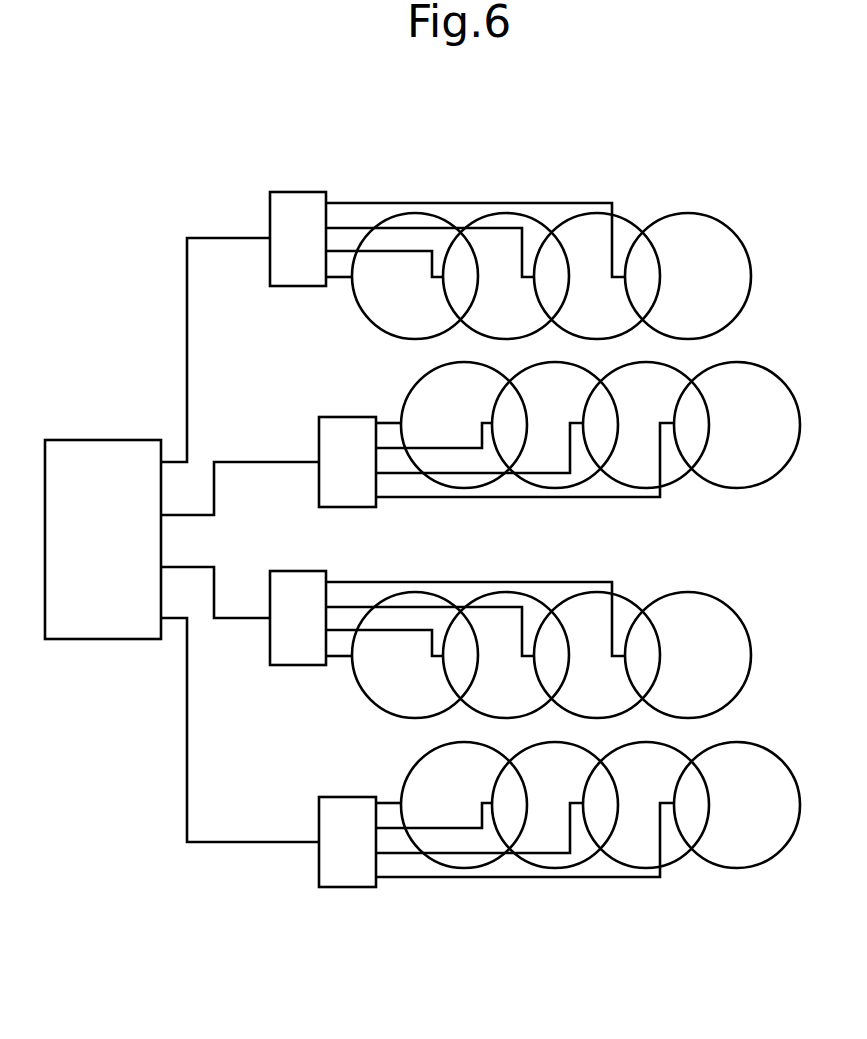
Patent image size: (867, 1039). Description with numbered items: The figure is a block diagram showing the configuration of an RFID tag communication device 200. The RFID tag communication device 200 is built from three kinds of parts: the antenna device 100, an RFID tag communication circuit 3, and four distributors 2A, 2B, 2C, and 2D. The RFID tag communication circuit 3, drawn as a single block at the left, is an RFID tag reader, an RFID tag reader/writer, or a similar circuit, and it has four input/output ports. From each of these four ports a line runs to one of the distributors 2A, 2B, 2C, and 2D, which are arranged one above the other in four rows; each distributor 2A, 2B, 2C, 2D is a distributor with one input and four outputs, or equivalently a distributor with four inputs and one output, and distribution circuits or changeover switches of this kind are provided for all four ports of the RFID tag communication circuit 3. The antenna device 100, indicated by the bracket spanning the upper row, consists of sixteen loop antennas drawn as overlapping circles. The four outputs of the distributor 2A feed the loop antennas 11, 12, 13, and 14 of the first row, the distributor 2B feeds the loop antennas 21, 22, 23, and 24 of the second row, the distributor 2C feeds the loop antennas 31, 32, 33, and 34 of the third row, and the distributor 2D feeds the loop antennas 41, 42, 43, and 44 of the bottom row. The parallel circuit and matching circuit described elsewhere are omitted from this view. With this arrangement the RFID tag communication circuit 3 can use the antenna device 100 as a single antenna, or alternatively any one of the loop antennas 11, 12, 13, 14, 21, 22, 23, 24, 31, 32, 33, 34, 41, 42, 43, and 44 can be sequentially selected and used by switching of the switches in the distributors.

The RFID tag communication device 200 is at (128, 144).
The antenna device 100 is at (743, 143).
The RFID tag communication circuit 3 is at (103, 440).
The distributor 2A is at (300, 192).
The distributor 2B is at (349, 417).
The distributor 2C is at (300, 571).
The distributor 2D is at (349, 797).
The loop antenna 11 is at (415, 213).
The loop antenna 12 is at (506, 213).
The loop antenna 13 is at (597, 213).
The loop antenna 14 is at (688, 213).
The loop antenna 21 is at (469, 488).
The loop antenna 22 is at (560, 488).
The loop antenna 23 is at (651, 488).
The loop antenna 24 is at (742, 488).
The loop antenna 31 is at (415, 592).
The loop antenna 32 is at (506, 592).
The loop antenna 33 is at (597, 592).
The loop antenna 34 is at (688, 592).
The loop antenna 41 is at (469, 868).
The loop antenna 42 is at (560, 868).
The loop antenna 43 is at (651, 868).
The loop antenna 44 is at (742, 868).